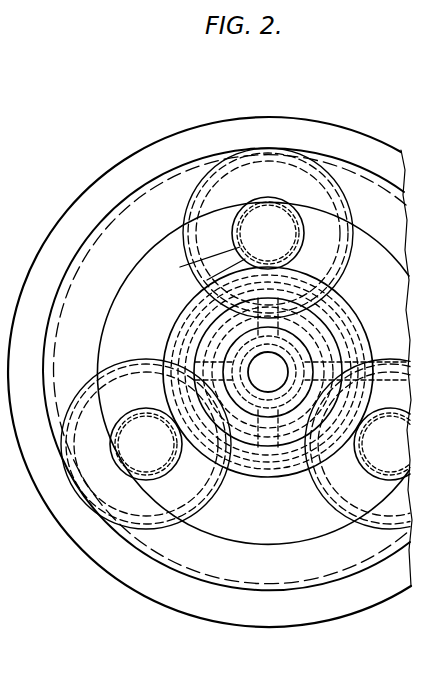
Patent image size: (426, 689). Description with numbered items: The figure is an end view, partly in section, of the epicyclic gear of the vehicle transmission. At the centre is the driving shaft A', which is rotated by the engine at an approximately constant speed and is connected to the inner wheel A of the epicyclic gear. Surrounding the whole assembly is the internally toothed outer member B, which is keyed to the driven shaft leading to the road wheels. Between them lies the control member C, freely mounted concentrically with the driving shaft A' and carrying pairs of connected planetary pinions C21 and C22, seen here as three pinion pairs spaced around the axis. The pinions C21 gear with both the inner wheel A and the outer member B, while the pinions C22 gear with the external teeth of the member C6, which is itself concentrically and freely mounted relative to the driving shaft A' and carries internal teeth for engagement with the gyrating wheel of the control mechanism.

The internally toothed outer member B is at (358, 172).
The control member C is at (120, 318).
The planetary pinions C21 is at (342, 266).
The planetary pinions C22 is at (200, 263).
The inner wheel A is at (290, 372).
The member with external and internal teeth C6 is at (376, 387).
The driving shaft A' is at (268, 433).